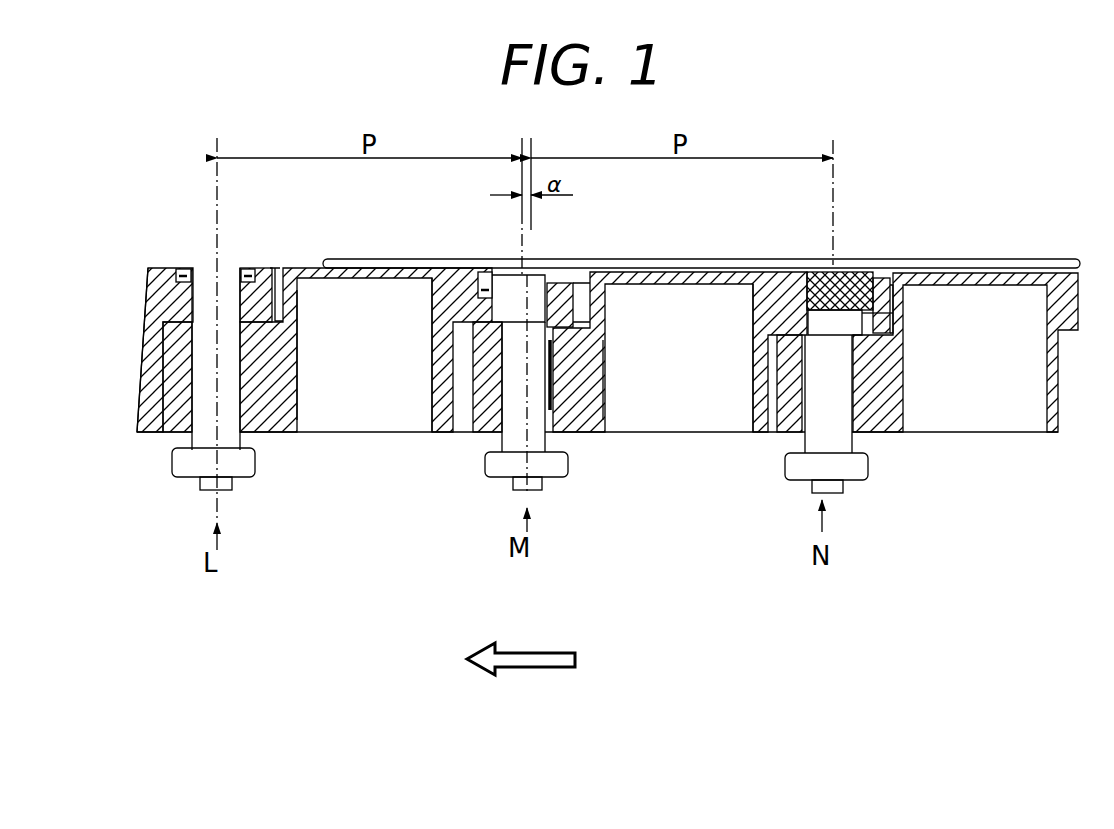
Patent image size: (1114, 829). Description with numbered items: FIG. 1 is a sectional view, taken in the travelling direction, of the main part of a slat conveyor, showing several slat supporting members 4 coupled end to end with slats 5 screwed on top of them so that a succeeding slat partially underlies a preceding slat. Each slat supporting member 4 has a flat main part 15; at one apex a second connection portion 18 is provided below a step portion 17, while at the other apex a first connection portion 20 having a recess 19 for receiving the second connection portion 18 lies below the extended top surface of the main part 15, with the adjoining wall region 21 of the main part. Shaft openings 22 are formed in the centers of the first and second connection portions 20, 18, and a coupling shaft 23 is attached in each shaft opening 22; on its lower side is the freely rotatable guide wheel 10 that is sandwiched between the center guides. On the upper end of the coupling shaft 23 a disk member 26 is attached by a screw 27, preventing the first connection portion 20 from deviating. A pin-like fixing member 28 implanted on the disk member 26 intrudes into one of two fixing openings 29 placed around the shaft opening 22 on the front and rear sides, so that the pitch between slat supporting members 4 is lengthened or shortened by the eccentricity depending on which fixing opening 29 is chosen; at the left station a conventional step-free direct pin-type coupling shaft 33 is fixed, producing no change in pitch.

The slat supporting member 4 is at (293, 558).
The slat 5 is at (655, 258).
The guide wheel 10 is at (257, 462).
The main part 15 is at (300, 268).
The step portion 17 is at (275, 268).
The second connection portion 18 is at (165, 432).
The recess 19 is at (150, 432).
The first connection portion 20 is at (575, 283).
The inner wall surface 21 is at (290, 395).
The shaft opening 22 is at (203, 450).
The coupling shaft 23 is at (868, 440).
The disk member 26 is at (505, 268).
The screw 27 is at (848, 275).
The fixing member 28 is at (483, 290).
The fixing opening 29 is at (907, 295).
The direct pin-type coupling shaft 33 is at (205, 343).